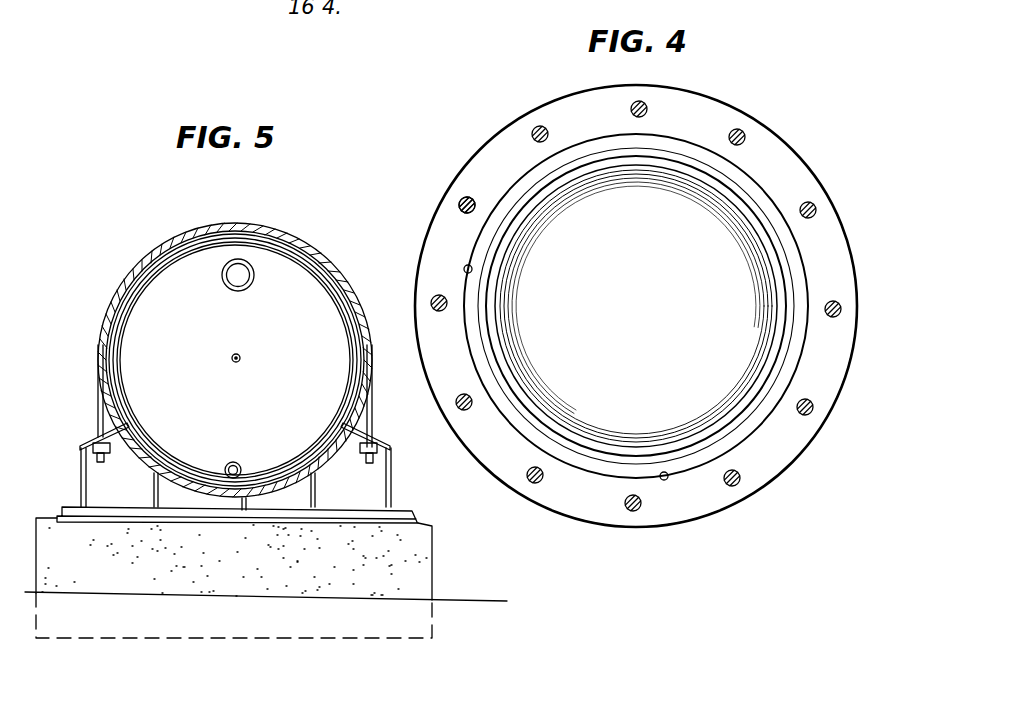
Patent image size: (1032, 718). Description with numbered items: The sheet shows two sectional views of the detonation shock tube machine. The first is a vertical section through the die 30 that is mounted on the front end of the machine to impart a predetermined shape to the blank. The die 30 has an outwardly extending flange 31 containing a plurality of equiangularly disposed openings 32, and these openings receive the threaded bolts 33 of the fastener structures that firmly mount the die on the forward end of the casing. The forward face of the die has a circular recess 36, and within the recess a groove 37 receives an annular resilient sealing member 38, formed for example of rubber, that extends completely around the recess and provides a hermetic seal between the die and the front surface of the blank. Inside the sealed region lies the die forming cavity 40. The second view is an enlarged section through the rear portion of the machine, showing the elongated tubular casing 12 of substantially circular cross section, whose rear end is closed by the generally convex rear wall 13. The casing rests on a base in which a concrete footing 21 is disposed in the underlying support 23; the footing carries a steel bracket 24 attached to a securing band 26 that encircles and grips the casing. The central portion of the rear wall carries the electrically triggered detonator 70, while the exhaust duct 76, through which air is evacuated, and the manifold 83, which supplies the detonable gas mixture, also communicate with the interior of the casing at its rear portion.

In FIG. 4, the die 30 is at (714, 85).
In FIG. 4, the outwardly extending flange 31 is at (501, 153).
In FIG. 4, the openings 32 is at (461, 198).
In FIG. 4, the threaded bolts 33 is at (746, 133).
In FIG. 4, the recess 36 is at (466, 268).
In FIG. 4, the groove 37 is at (735, 430).
In FIG. 4, the resilient sealing member 38 is at (490, 350).
In FIG. 4, the die forming cavity 40 is at (590, 310).
In FIG. 5, the casing 12 is at (137, 281).
In FIG. 5, the rear wall 13 is at (181, 368).
In FIG. 5, the concrete footing 21 is at (415, 548).
In FIG. 5, the underlying support 23 is at (457, 600).
In FIG. 5, the steel bracket 24 is at (97, 482).
In FIG. 5, the securing band 26 is at (100, 387).
In FIG. 5, the detonator 70 is at (240, 356).
In FIG. 5, the exhaust duct 76 is at (255, 283).
In FIG. 5, the manifold 83 is at (240, 462).